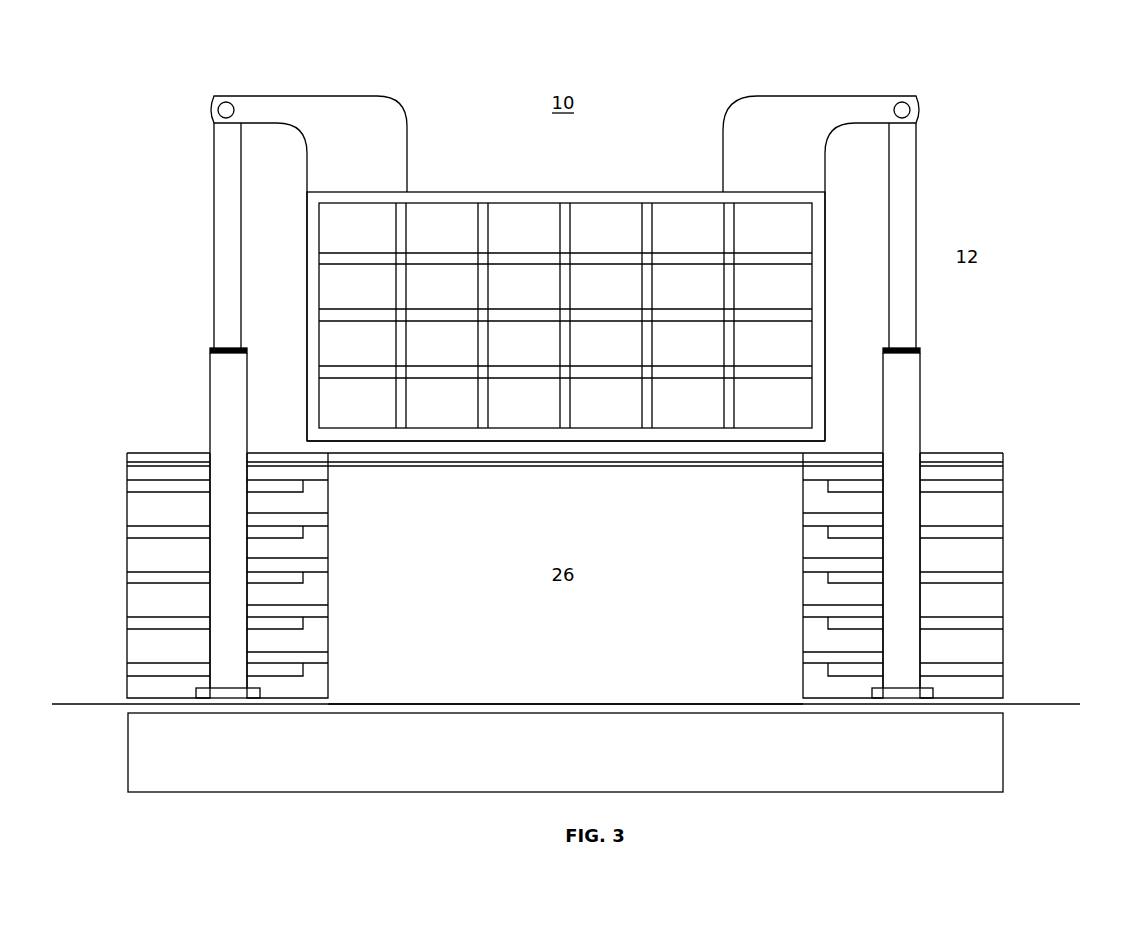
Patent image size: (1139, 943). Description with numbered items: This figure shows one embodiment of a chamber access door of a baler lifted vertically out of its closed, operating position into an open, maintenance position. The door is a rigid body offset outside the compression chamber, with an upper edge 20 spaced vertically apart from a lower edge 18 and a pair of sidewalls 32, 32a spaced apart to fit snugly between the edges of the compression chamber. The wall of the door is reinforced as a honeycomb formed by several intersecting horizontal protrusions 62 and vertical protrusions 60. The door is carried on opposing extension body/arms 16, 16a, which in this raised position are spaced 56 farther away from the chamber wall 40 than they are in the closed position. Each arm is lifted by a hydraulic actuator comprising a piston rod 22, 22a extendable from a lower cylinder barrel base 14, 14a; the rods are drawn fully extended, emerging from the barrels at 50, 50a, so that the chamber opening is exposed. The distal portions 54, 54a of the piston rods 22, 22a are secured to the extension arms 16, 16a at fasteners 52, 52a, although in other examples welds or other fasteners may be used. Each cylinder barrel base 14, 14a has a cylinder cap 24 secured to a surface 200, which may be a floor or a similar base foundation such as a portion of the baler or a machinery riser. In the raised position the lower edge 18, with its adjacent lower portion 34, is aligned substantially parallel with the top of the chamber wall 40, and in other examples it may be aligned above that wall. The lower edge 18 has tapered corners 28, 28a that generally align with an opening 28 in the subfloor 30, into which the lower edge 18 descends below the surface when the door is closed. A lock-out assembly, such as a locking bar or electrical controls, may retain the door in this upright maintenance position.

The cylinder barrel base 14 is at (905, 423).
The cylinder barrel base 14a is at (230, 423).
The extension arm 16 is at (783, 95).
The extension arm 16a is at (358, 94).
The lower edge 18 is at (605, 458).
The upper edge 20 is at (612, 190).
The piston rod 22 is at (905, 210).
The piston rod 22a is at (223, 210).
The cylinder cap 24 is at (203, 688).
The tapered corner 28 is at (480, 703).
The spacer 28a is at (323, 465).
The subfloor 30 is at (603, 728).
The sidewall 32 is at (825, 345).
The sidewall 32a is at (307, 345).
The cross bar 34 is at (480, 447).
The chamber wall 40 is at (137, 554).
The sleeve 50 is at (898, 347).
The sleeve 50a is at (230, 347).
The fastener 52 is at (900, 110).
The fastener 52a is at (228, 110).
The pivot bracket 54 is at (866, 125).
The pivot bracket 54a is at (267, 125).
The spacing 56 is at (567, 242).
The vertical protrusion 60 is at (402, 293).
The horizontal protrusion 62 is at (367, 317).
The surface 200 is at (1052, 704).